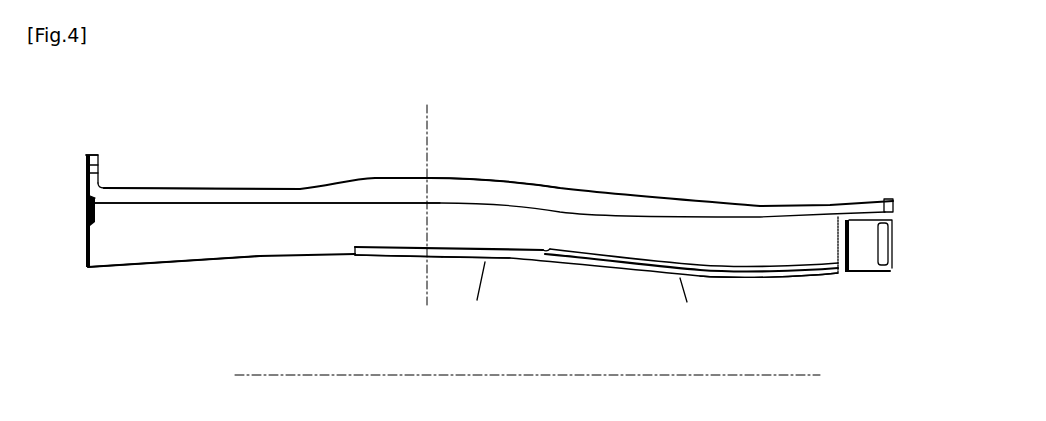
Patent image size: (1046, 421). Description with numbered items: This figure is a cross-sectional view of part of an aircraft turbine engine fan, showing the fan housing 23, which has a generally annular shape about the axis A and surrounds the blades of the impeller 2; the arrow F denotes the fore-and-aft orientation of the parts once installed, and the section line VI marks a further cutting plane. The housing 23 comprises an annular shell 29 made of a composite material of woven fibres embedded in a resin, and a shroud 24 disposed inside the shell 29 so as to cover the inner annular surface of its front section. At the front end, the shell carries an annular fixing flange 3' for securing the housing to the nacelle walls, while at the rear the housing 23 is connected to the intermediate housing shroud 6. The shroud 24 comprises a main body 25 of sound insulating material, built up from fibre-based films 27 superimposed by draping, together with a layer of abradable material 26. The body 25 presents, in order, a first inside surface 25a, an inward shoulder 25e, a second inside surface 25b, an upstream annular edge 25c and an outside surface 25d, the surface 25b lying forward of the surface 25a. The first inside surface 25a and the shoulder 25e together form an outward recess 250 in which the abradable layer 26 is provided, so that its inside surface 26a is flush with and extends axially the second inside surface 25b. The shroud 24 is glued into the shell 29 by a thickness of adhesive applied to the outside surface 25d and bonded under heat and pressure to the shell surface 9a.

The fan housing 23 is at (710, 88).
The impeller 2 is at (575, 304).
The main body 25 is at (68, 233).
The annular fixing flange 3' is at (74, 141).
The outside surface 25d is at (212, 202).
The rail surface 9a is at (202, 188).
The upstream annular edge 25c is at (90, 212).
The second inside surface 25b is at (120, 262).
The film 27 is at (165, 268).
The shoulder 25e is at (355, 247).
The first inside surface 25a is at (442, 247).
The annular shell 29 is at (535, 180).
The outward recess 250 is at (543, 252).
The inside surface of the abradable layer 26a is at (472, 262).
The layer of abradable material 26 is at (745, 289).
The intermediate housing shroud 6 is at (870, 273).
The shroud 24 is at (103, 303).
The section line VI- VI is at (416, 121).
The fore-and-aft orientation arrow F is at (157, 337).
The axis A is at (758, 374).